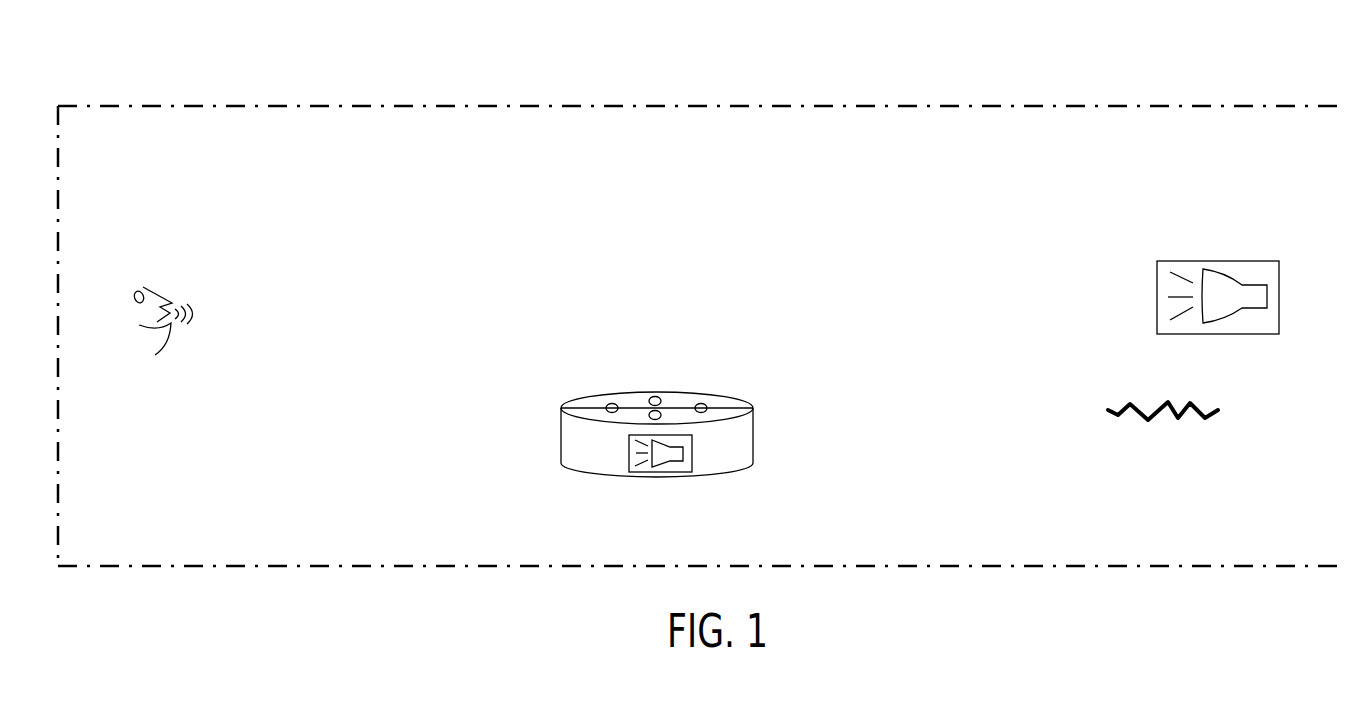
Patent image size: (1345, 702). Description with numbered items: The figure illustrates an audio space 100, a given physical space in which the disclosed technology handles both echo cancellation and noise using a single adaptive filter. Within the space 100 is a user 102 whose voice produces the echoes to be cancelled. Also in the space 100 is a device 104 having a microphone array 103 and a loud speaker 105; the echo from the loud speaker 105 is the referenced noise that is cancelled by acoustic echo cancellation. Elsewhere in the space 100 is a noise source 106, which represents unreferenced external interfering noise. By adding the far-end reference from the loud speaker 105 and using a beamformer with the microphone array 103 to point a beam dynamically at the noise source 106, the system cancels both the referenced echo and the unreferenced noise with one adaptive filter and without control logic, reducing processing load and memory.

The audio space 100 is at (820, 72).
The user 102 is at (172, 271).
The microphone array 103 is at (703, 403).
The device 104 is at (624, 378).
The loud speaker 105 is at (692, 450).
The noise source 106 is at (1254, 253).